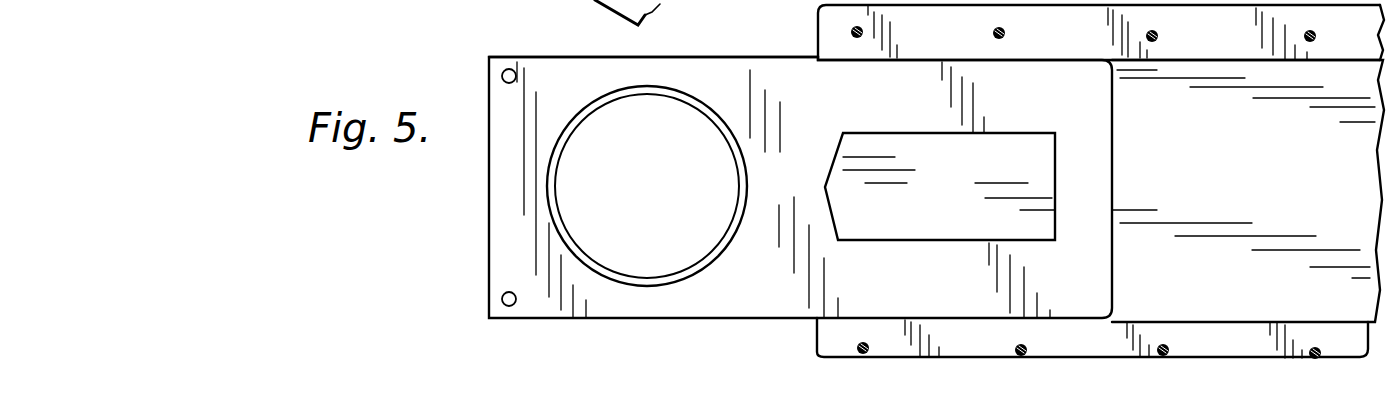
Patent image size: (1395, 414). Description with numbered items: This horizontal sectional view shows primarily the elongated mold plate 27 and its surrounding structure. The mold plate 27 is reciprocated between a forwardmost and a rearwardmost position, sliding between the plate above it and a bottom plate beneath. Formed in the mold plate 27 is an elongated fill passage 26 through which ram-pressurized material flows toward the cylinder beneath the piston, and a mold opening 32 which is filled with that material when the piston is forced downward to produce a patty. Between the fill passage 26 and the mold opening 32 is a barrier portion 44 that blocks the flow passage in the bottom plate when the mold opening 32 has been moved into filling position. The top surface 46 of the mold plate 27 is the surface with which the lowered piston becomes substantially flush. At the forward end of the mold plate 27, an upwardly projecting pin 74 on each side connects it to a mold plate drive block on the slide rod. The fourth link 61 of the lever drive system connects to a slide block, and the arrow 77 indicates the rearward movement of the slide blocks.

The fill passage 26 is at (952, 198).
The mold plate 27 is at (1098, 98).
The mold opening 32 is at (570, 130).
The barrier portion 44 is at (798, 188).
The top surface 46 is at (748, 68).
The upwardly projecting pin 74 is at (502, 76).
The arrow 77 is at (591, 15).
The fourth link 61 is at (671, 12).